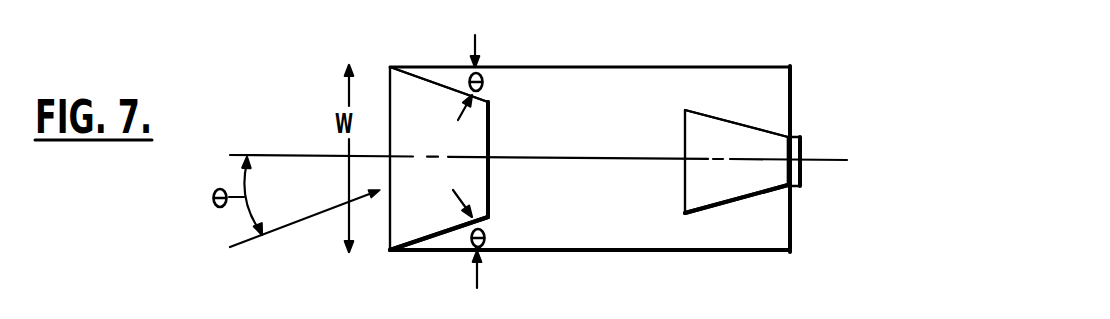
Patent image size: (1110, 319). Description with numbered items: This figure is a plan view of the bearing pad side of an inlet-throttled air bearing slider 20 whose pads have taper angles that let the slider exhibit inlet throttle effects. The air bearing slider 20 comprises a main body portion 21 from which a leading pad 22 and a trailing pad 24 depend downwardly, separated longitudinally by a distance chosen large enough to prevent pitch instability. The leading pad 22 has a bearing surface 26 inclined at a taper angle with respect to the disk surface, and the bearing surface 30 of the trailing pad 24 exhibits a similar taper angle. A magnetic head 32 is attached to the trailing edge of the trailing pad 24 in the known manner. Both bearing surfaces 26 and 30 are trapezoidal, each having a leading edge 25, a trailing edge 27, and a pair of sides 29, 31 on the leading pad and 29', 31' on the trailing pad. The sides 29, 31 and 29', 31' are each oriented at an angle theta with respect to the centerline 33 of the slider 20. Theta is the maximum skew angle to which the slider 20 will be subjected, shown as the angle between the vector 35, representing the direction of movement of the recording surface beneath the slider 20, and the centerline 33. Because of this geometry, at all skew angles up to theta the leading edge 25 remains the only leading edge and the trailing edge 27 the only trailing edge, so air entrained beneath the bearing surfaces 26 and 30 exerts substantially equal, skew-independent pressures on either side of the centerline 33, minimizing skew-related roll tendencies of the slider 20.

The air bearing slider 20 is at (713, 61).
The main body portion 21 is at (625, 88).
The leading pad 22 is at (498, 145).
The trailing pad 24 is at (676, 127).
The leading edge 25 is at (392, 117).
The bearing surface 26 is at (470, 180).
The trailing edge 27 is at (490, 118).
The side 29 is at (439, 51).
The side 29' is at (778, 93).
The bearing surface 30 is at (755, 144).
The side 31 is at (439, 268).
The side 31' is at (773, 214).
The magnetic head 32 is at (800, 173).
The centerline 33 is at (283, 152).
The vector 35 is at (298, 223).